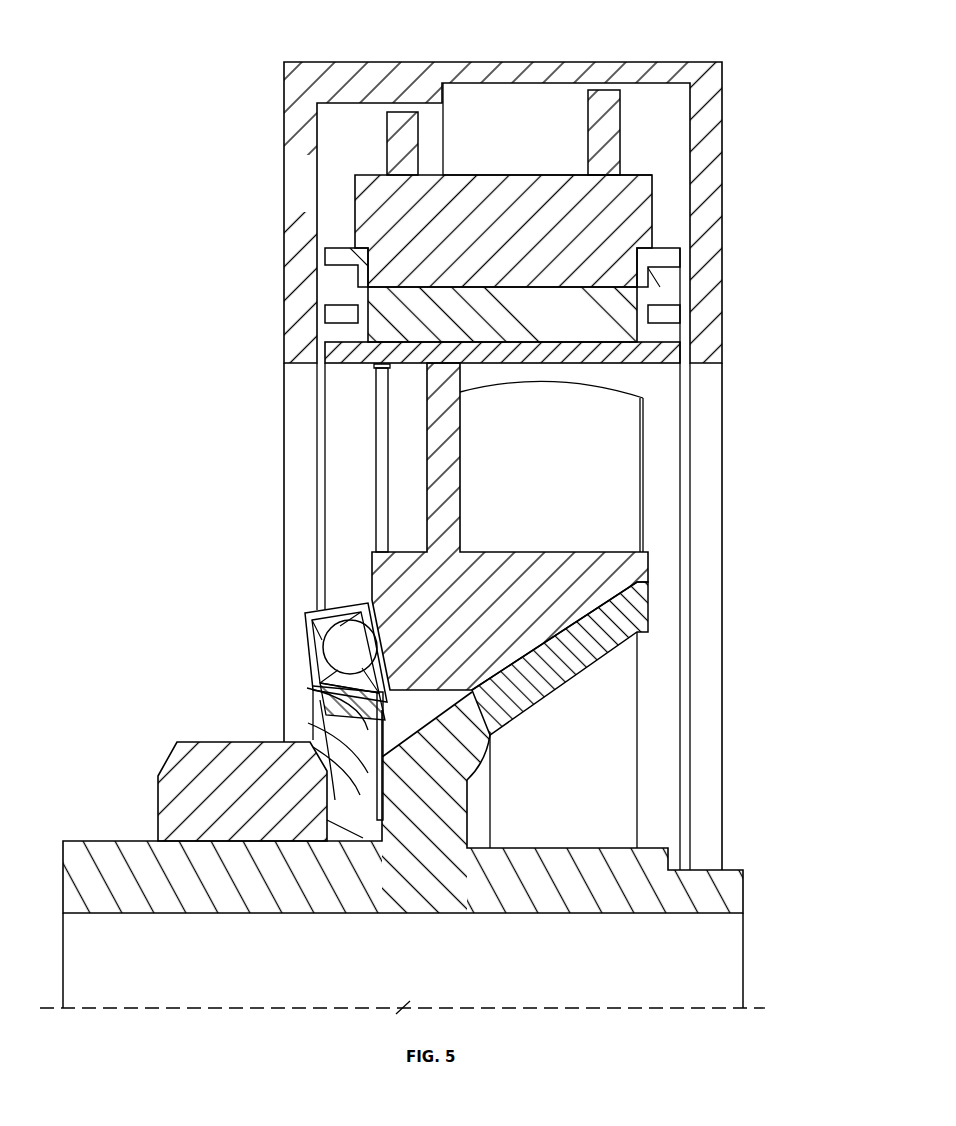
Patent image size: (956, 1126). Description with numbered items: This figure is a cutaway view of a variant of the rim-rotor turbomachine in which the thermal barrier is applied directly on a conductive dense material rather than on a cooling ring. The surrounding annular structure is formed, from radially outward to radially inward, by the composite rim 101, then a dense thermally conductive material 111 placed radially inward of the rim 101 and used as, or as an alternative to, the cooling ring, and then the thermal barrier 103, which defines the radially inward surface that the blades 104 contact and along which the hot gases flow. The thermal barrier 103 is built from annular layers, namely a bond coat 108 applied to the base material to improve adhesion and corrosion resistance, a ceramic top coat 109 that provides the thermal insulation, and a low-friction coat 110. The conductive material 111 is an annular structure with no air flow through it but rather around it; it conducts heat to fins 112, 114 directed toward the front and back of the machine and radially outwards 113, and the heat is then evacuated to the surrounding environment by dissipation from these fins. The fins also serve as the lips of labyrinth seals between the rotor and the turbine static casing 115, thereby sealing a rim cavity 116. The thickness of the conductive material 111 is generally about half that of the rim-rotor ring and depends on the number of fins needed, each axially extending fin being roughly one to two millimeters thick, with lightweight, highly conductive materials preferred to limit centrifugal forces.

The composite rim 101 is at (383, 222).
The thermal barrier 103 is at (325, 340).
The blades 104 is at (402, 457).
The bond coat 108 is at (342, 333).
The top coat 109 is at (362, 353).
The low-friction coat 110 is at (386, 369).
The dense thermally conductive material 111 is at (430, 309).
The fin 112 is at (308, 254).
The radially outward fin 113 is at (640, 126).
The fin 114 is at (698, 246).
The turbine static casing 115 is at (708, 268).
The rim cavity 116 is at (494, 138).